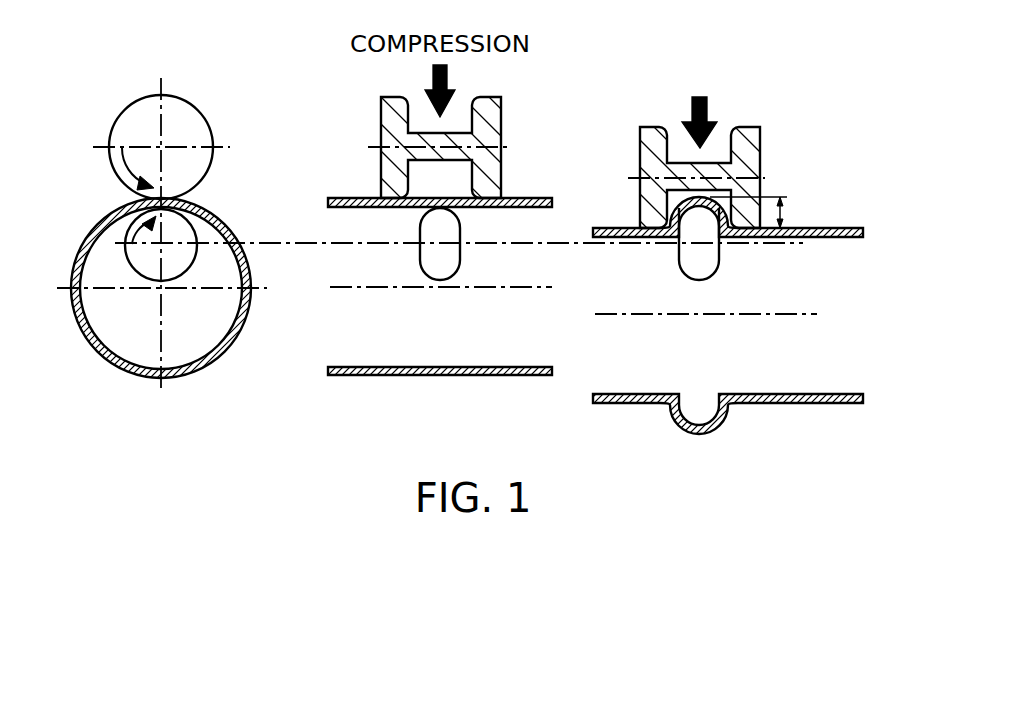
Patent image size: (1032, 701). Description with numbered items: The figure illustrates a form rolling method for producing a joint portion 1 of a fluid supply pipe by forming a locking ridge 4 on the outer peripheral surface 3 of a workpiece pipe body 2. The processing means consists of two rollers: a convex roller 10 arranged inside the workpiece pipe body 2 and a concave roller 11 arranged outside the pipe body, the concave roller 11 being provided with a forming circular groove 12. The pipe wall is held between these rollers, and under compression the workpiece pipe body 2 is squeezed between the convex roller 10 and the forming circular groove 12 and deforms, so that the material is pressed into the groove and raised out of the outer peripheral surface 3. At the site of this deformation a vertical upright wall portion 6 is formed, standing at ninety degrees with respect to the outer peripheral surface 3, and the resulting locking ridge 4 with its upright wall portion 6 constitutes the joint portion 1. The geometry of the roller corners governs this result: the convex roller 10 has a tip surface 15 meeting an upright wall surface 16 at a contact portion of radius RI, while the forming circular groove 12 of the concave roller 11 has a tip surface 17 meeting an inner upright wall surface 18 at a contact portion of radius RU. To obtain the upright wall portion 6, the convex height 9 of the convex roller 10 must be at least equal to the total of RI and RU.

The joint portion 1 is at (812, 182).
The workpiece pipe body 2 is at (352, 202).
The outer peripheral surface 3 is at (848, 228).
The locking ridge 4 is at (680, 203).
The upright wall portion 6 is at (677, 222).
The convex height 9 is at (787, 212).
The convex roller 10 is at (185, 228).
The concave roller 11 is at (128, 120).
The forming circular groove 12 is at (418, 118).
The tip surface 15 is at (438, 207).
The upright wall surface 16 is at (423, 227).
The tip surface 17 is at (393, 197).
The inner upright wall surface 18 is at (472, 182).